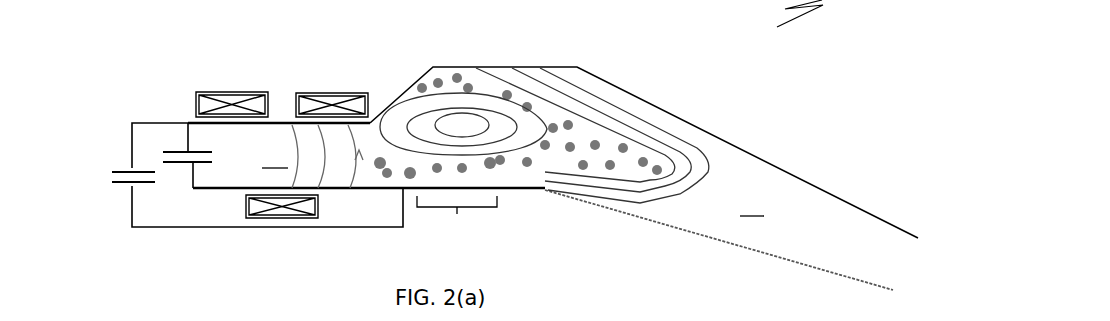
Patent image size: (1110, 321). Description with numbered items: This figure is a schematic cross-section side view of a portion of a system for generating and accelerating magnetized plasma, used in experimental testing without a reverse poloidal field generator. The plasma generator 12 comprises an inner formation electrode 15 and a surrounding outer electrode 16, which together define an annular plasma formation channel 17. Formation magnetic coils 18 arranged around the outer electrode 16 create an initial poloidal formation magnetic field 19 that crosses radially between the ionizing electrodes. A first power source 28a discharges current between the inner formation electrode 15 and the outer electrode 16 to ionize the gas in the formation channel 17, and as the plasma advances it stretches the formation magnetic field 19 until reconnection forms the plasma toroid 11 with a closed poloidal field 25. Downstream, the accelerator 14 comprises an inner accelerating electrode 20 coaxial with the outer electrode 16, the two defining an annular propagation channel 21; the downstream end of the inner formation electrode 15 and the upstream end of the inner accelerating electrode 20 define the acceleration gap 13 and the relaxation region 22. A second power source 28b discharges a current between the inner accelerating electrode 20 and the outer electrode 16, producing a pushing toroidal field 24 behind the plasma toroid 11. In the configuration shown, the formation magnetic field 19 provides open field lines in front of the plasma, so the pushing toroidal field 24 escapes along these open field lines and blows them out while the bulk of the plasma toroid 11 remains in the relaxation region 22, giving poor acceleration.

The plasma toroid 11 is at (459, 123).
The plasma generator 12 is at (205, 133).
The acceleration gap 13 is at (385, 190).
The accelerator 14 is at (664, 92).
The inner formation electrode 15 is at (214, 196).
The outer electrode 16 is at (276, 120).
The plasma formation channel 17 is at (275, 158).
The formation magnetic coils 18 is at (329, 88).
The formation magnetic field 19 is at (330, 170).
The inner accelerating electrode 20 is at (611, 216).
The propagation channel 21 is at (752, 206).
The relaxation region 22 is at (457, 221).
The pushing toroidal field 24 is at (547, 156).
The closed poloidal field 25 is at (536, 124).
The first power source 28a is at (181, 169).
The second power source 28b is at (102, 182).